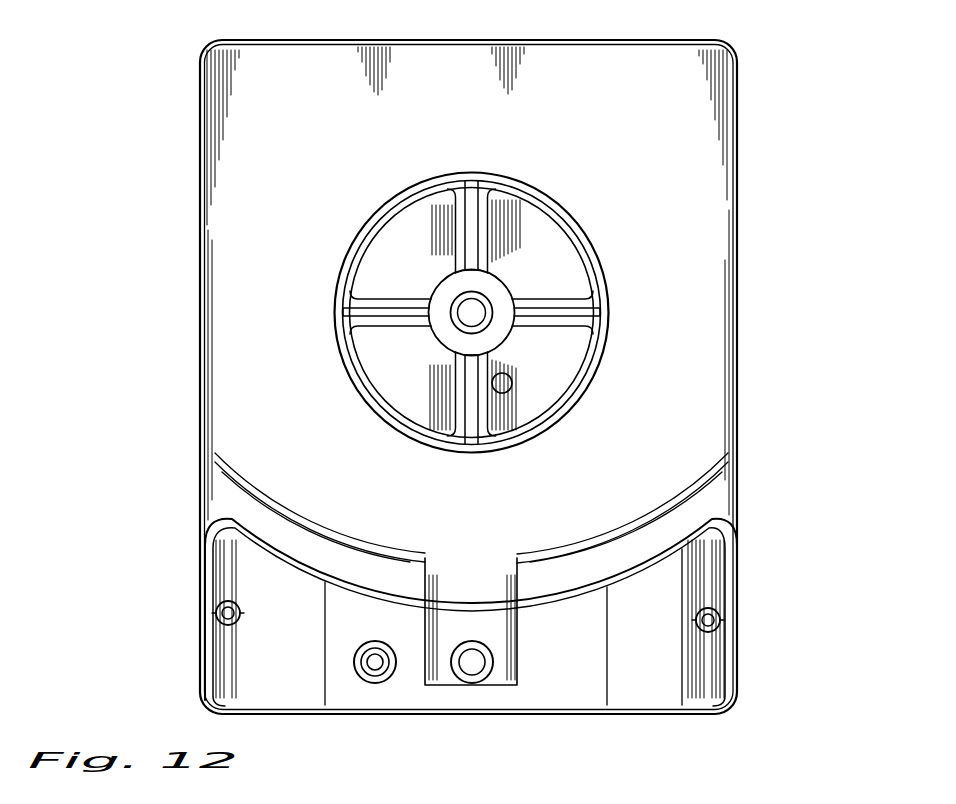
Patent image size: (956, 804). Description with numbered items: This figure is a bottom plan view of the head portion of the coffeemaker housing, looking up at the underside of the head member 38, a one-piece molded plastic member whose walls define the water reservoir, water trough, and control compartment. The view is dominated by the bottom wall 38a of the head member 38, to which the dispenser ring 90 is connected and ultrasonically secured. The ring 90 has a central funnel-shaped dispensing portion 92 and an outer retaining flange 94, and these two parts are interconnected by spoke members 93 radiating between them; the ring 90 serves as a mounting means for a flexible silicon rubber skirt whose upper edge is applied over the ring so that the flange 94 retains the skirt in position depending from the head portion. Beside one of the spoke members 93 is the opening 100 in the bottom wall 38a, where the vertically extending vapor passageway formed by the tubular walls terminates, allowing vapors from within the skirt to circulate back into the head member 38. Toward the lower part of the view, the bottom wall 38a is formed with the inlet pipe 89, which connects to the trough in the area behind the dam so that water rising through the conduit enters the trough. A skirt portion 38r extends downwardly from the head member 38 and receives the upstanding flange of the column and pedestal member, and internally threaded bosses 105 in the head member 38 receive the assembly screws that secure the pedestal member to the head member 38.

The head member 38 is at (737, 242).
The bottom wall 38a is at (322, 142).
The skirt portion 38r is at (740, 598).
The inlet pipe 89 is at (490, 673).
The dispenser ring 90 is at (585, 228).
The central funnel-shaped dispensing portion 92 is at (443, 327).
The spoke members 93 is at (404, 299).
The retaining flange 94 is at (606, 337).
The opening 100 is at (511, 388).
The internally threaded bosses 105 is at (219, 610).